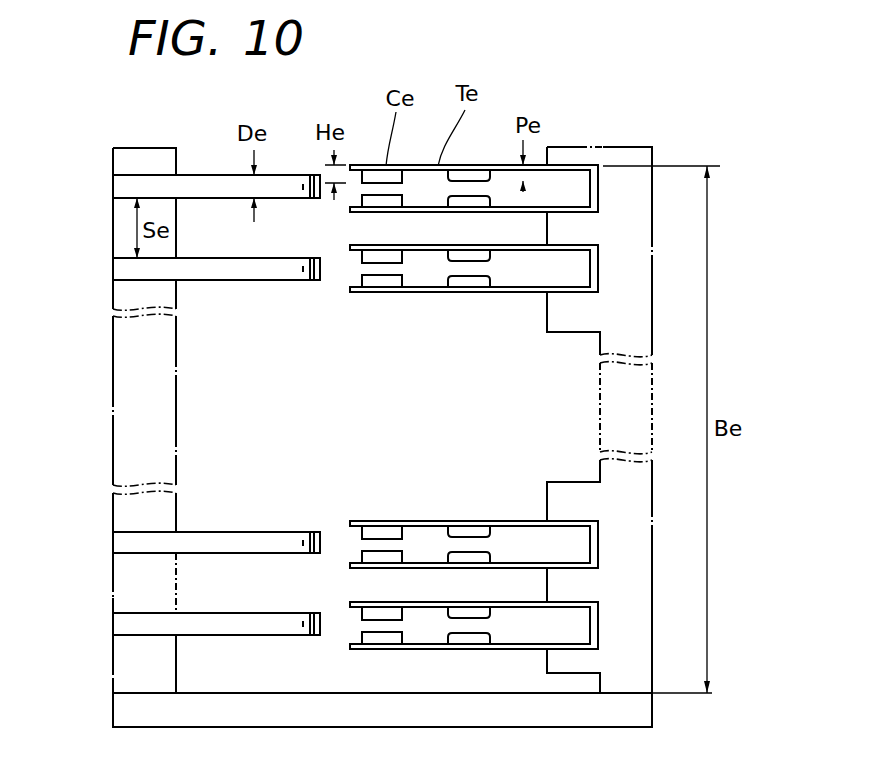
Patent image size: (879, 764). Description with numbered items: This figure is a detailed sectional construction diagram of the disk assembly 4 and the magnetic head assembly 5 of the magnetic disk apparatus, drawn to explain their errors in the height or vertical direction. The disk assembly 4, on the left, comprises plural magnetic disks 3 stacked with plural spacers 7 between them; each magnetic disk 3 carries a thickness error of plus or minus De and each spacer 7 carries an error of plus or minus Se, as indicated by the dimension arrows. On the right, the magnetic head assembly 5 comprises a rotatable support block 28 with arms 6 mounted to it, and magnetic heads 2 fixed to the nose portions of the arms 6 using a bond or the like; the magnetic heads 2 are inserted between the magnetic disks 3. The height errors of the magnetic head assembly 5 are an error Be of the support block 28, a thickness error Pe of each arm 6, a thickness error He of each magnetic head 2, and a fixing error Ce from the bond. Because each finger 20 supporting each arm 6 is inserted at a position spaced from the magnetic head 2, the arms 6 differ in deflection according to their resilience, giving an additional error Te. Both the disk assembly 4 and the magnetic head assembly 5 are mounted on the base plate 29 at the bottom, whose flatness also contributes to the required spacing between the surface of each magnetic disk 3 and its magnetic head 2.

The magnetic head 2 is at (370, 170).
The magnetic disk 3 is at (212, 175).
The disk assembly 4 is at (145, 148).
The magnetic head assembly 5 is at (632, 147).
The arm 6 is at (412, 165).
The spacer 7 is at (120, 226).
The finger 20 is at (482, 166).
The support block 28 is at (640, 587).
The base plate 29 is at (645, 722).